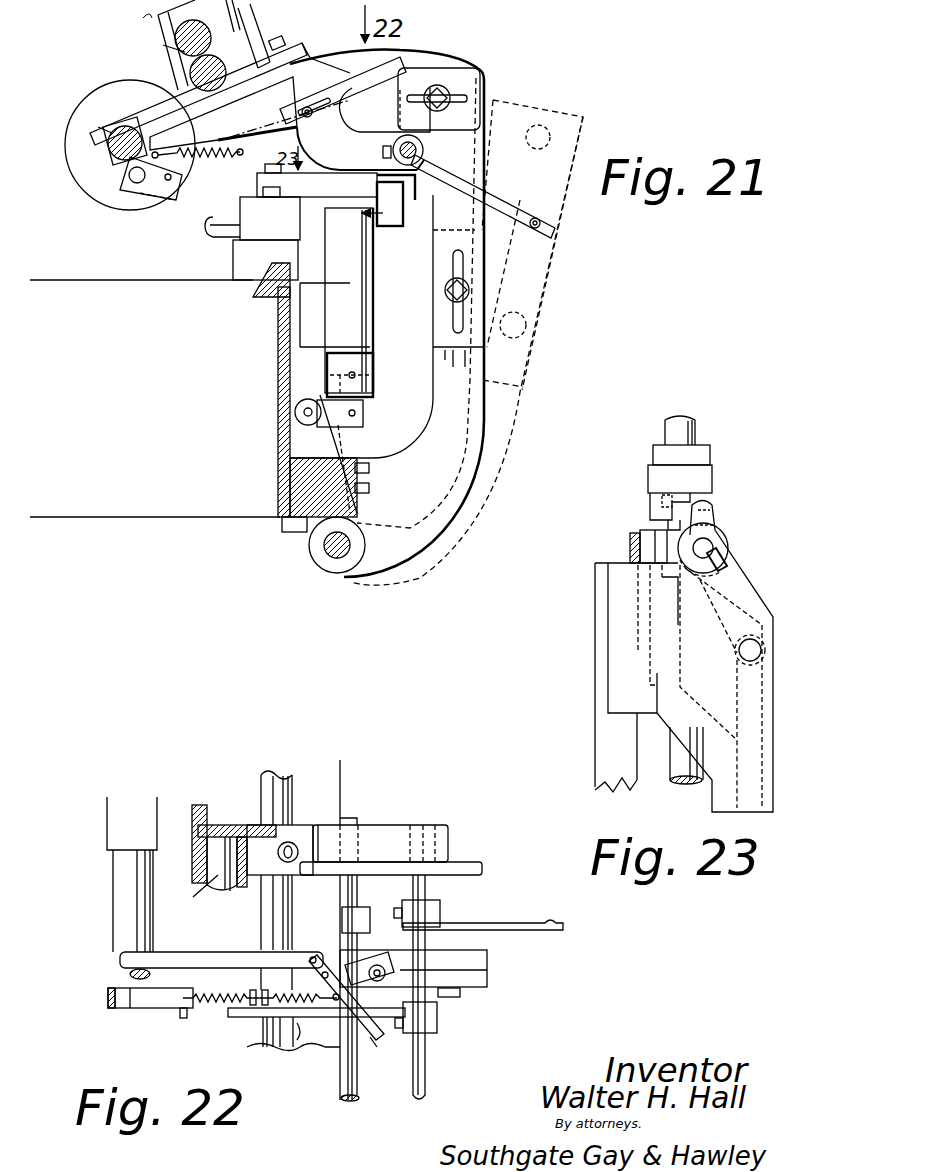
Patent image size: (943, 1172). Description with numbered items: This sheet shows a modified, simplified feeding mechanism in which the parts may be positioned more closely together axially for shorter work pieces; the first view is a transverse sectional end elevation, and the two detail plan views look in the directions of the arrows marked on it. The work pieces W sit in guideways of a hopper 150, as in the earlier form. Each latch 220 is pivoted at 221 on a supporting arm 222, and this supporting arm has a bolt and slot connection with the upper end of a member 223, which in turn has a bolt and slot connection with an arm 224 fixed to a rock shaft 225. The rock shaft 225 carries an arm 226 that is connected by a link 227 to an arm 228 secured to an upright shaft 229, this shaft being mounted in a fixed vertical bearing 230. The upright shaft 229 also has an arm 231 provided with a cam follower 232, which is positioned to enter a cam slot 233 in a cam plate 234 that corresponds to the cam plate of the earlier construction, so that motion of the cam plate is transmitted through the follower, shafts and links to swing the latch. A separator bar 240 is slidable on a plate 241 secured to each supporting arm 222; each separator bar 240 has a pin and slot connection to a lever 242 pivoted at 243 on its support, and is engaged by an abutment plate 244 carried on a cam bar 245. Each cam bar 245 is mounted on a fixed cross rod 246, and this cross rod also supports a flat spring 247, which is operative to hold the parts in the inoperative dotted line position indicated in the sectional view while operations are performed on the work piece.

In FIG. 21, the strip feeding station 150 is at (100, 27).
In FIG. 22, the strip feeding station 150 is at (218, 861).
In FIG. 21, the latch 220 is at (107, 168).
In FIG. 22, the latch 220 is at (112, 1000).
In FIG. 21, the pivot 221 is at (137, 180).
In FIG. 22, the pivot 221 is at (140, 1008).
In FIG. 21, the supporting arm 222 is at (220, 167).
In FIG. 22, the supporting arm 222 is at (480, 983).
In FIG. 21, the member 223 is at (487, 143).
In FIG. 22, the member 223 is at (483, 960).
In FIG. 21, the arm 224 is at (443, 432).
In FIG. 22, the arm 224 is at (485, 940).
In FIG. 21, the rock shaft 225 is at (327, 552).
In FIG. 23, the rock shaft 225 is at (697, 425).
In FIG. 22, the rock shaft 225 is at (338, 1093).
In FIG. 21, the arm 226 is at (344, 440).
In FIG. 23, the arm 226 is at (655, 478).
In FIG. 21, the link 227 is at (308, 400).
In FIG. 23, the link 227 is at (683, 510).
In FIG. 21, the arm 228 is at (373, 387).
In FIG. 23, the arm 228 is at (713, 521).
In FIG. 21, the upright shaft 229 is at (336, 182).
In FIG. 23, the upright shaft 229 is at (707, 546).
In FIG. 21, the fixed vertical bearing 230 is at (363, 323).
In FIG. 23, the fixed vertical bearing 230 is at (667, 550).
In FIG. 21, the arm 231 is at (370, 230).
In FIG. 23, the arm 231 is at (723, 560).
In FIG. 21, the cam follower 232 is at (410, 210).
In FIG. 23, the cam follower 232 is at (767, 663).
In FIG. 21, the cam slot 233 is at (392, 177).
In FIG. 23, the cam slot 233 is at (740, 692).
In FIG. 21, the cam plate 234 is at (310, 187).
In FIG. 23, the cam plate 234 is at (773, 720).
In FIG. 21, the separator bar 240 is at (153, 113).
In FIG. 22, the separator bar 240 is at (200, 950).
In FIG. 21, the plate 241 is at (193, 117).
In FIG. 22, the lever 242 is at (367, 1040).
In FIG. 22, the pivot 243 is at (320, 977).
In FIG. 21, the abutment plate 244 is at (322, 93).
In FIG. 22, the abutment plate 244 is at (303, 1047).
In FIG. 21, the cam bar 245 is at (337, 115).
In FIG. 22, the cam bar 245 is at (240, 1017).
In FIG. 21, the fixed cross rod 246 is at (417, 147).
In FIG. 22, the fixed cross rod 246 is at (423, 1057).
In FIG. 21, the flat spring 247 is at (553, 232).
In FIG. 22, the flat spring 247 is at (500, 918).